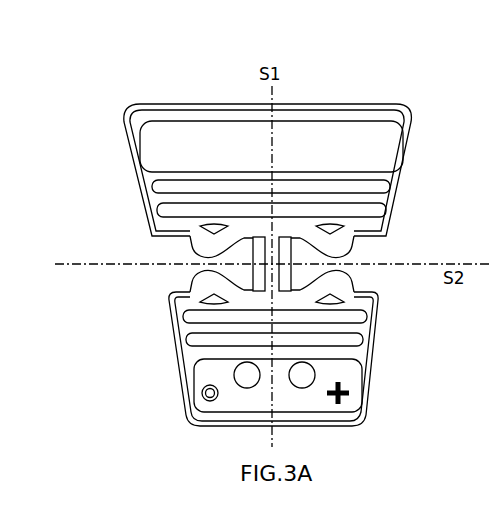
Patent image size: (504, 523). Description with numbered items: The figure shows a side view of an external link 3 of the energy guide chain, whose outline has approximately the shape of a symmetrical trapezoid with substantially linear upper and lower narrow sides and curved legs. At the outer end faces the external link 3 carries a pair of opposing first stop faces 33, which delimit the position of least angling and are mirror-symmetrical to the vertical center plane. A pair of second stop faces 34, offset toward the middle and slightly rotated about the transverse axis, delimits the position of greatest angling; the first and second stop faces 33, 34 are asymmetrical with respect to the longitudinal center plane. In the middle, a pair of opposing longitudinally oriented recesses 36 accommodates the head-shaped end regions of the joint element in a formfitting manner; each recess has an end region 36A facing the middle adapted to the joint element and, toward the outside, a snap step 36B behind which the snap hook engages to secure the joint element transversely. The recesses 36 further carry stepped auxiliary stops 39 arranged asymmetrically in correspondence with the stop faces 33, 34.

The external link 3 is at (104, 85).
The first stop faces 33 is at (129, 191).
The second stop faces 34 is at (173, 360).
The recesses 36 is at (160, 278).
The end region facing toward the middle 36A is at (243, 253).
The snap step 36B is at (283, 272).
The auxiliary stops 39 is at (352, 247).